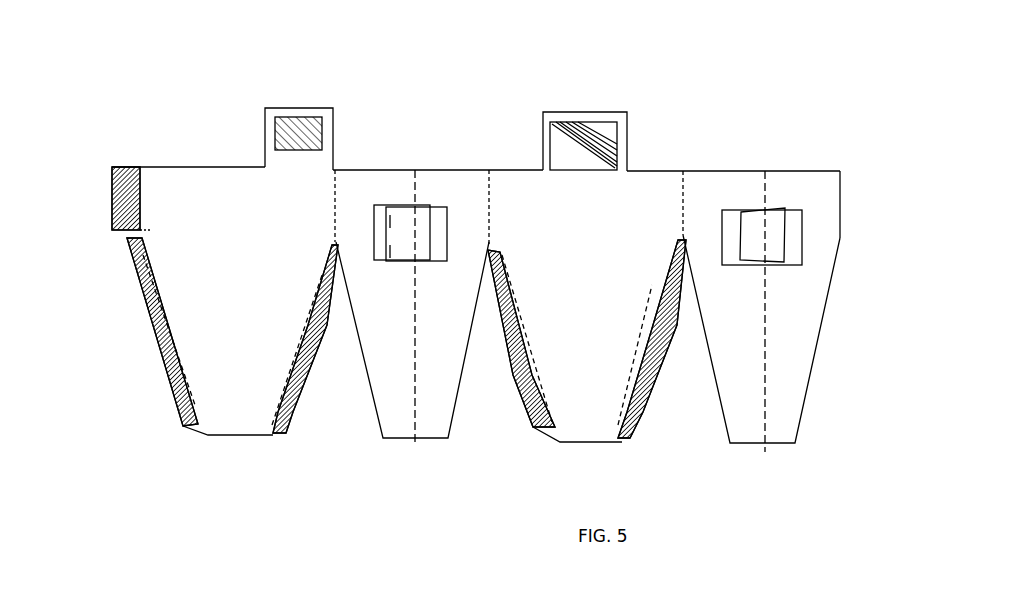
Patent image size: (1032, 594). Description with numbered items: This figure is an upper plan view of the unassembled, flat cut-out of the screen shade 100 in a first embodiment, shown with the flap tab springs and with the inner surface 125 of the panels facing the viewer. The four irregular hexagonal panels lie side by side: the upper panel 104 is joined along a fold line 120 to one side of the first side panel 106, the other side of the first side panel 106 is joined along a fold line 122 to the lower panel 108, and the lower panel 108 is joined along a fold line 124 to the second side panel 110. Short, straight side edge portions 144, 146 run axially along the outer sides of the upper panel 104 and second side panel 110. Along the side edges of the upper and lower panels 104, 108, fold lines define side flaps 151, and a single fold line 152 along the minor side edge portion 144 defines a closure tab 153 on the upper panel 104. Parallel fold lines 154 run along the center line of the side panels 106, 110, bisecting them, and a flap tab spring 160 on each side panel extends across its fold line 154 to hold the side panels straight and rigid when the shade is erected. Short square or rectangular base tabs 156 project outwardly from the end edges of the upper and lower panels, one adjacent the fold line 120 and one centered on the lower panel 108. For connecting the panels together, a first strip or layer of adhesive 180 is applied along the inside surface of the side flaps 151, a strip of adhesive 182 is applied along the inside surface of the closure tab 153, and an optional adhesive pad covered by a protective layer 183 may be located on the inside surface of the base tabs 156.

The screen shade 100 is at (207, 82).
The upper panel 104 is at (222, 408).
The first side panel 106 is at (393, 432).
The lower panel 108 is at (568, 418).
The second side panel 110 is at (735, 432).
The fold line 120 is at (333, 200).
The fold line 122 is at (494, 208).
The fold line 124 is at (680, 200).
The inner surface 125 is at (244, 290).
The side edge portion 144 is at (134, 234).
The side edge portion 146 is at (833, 208).
The side flap 151 is at (166, 395).
The fold line 152 is at (144, 189).
The closure tab 153 is at (113, 165).
The fold line 154 is at (417, 322).
The base tab 156 is at (333, 112).
The flap tab spring 160 is at (390, 200).
The adhesive strip 180 is at (162, 362).
The adhesive strip 182 is at (110, 213).
The protective layer 183 is at (300, 116).